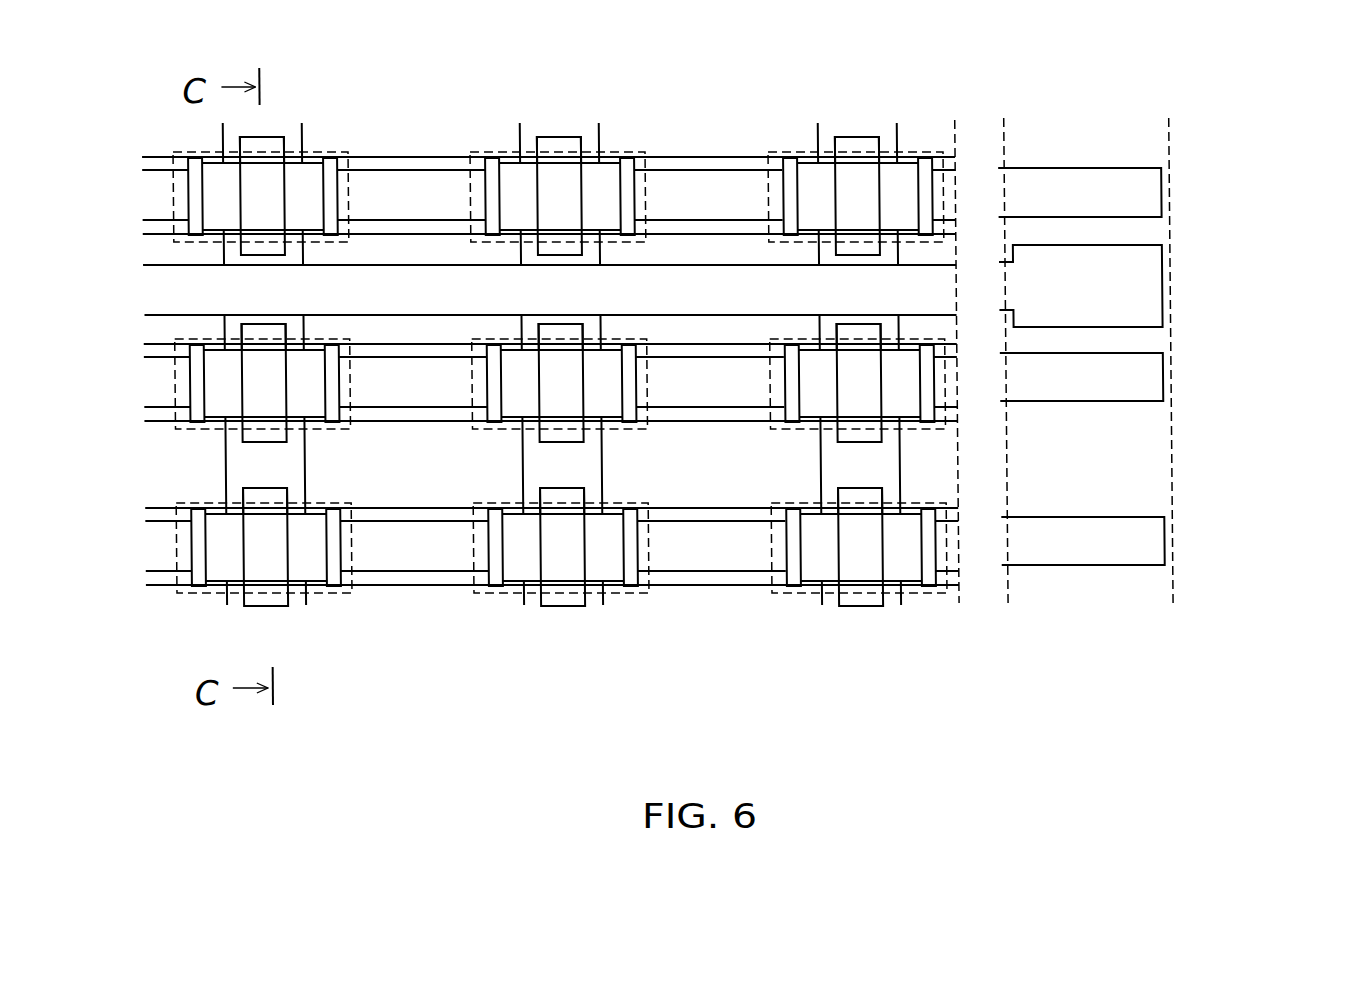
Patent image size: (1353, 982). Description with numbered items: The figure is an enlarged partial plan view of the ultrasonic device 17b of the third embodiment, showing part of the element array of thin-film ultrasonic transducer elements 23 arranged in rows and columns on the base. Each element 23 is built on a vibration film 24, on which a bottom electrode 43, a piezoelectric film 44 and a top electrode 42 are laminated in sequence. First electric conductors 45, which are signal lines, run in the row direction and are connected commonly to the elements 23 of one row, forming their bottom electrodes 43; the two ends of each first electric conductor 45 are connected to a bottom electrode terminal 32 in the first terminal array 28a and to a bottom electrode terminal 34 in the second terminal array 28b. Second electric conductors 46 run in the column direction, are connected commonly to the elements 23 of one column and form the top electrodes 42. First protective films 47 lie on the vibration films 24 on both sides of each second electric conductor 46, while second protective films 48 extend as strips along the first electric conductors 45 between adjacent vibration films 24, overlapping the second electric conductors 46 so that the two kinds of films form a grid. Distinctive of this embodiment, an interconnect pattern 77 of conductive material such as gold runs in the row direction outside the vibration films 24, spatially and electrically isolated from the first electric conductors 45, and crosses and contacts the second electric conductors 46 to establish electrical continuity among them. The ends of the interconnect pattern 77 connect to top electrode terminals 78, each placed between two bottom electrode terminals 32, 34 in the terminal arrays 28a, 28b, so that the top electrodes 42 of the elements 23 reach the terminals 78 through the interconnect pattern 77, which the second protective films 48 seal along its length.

The ultrasonic device 17b is at (903, 97).
The ultrasonic transducer element 23 is at (180, 143).
The vibration film 24 is at (315, 242).
The first terminal array 28a is at (1175, 467).
The second terminal array 28b is at (1239, 360).
The bottom electrode terminal 32 is at (1006, 360).
The bottom electrode terminal 34 is at (1162, 193).
The top electrode 42 is at (273, 243).
The bottom electrode 43 is at (187, 170).
The piezoelectric film 44 is at (187, 199).
The first electric conductor 45 is at (940, 220).
The second electric conductor 46 is at (309, 600).
The first protective film 47 is at (280, 220).
The second protective film 48 is at (273, 142).
The interconnect pattern 77 is at (152, 265).
The top electrode terminal 78 is at (1162, 287).